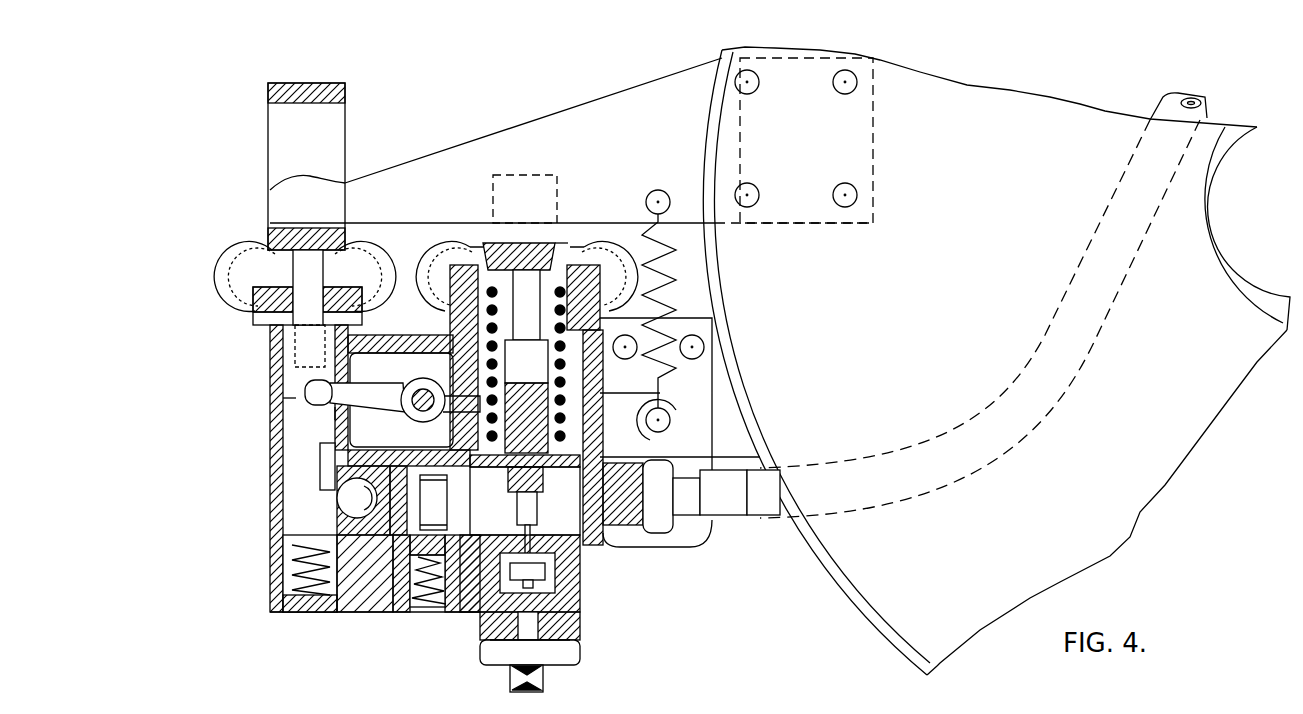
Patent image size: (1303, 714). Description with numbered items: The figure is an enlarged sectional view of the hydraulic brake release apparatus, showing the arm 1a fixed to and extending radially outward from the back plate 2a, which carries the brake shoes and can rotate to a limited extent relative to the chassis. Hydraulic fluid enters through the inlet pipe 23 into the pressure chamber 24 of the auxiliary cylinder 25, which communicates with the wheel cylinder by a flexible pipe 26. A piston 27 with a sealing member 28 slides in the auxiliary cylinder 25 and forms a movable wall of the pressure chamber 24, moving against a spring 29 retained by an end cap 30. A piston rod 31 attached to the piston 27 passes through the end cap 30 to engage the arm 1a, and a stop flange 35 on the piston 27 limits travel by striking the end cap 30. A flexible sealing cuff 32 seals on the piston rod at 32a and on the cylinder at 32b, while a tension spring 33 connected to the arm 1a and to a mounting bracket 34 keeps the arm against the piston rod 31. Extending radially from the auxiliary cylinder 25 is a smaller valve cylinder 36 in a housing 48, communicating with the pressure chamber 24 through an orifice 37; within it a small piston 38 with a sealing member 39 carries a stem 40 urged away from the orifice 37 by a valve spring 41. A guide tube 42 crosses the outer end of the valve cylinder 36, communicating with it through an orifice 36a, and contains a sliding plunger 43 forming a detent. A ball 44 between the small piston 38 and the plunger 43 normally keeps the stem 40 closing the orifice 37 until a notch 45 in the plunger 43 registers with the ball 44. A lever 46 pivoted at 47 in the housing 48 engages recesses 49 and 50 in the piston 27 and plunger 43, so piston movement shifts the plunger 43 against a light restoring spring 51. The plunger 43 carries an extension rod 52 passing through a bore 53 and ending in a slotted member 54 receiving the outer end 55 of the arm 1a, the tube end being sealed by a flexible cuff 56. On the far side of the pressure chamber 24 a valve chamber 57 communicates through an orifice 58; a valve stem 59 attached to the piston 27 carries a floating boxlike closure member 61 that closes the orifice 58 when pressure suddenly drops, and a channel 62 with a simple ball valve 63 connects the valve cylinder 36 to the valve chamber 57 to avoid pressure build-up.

The arm 1a is at (500, 150).
The back plate 2a is at (938, 333).
The inlet pipe 23 is at (540, 678).
The pressure chamber 24 is at (592, 505).
The auxiliary cylinder 25 is at (590, 383).
The flexible pipe 26 is at (1033, 418).
The piston 27 is at (592, 452).
The sealing member 28 is at (712, 457).
The spring 29 is at (490, 330).
The end cap 30 is at (510, 264).
The piston rod 31 is at (495, 258).
The flexible sealing cuff 32 is at (597, 247).
The cuff seal on piston rod 32a is at (568, 243).
The cuff seal on auxiliary cylinder 32b is at (665, 305).
The tension spring 33 is at (668, 272).
The mounting bracket 34 is at (700, 411).
The stop flange 35 is at (500, 250).
The valve cylinder 36 is at (348, 468).
The orifice 36a is at (337, 528).
The orifice 37 is at (448, 568).
The small piston 38 is at (350, 545).
The sealing member 39 is at (393, 565).
The stem 40 is at (462, 502).
The valve spring 41 is at (428, 468).
The guide tube 42 is at (276, 450).
The plunger 43 is at (292, 398).
The ball 44 is at (340, 500).
The notch 45 is at (322, 452).
The lever 46 is at (305, 386).
The pivot 47 is at (403, 383).
The housing 48 is at (345, 418).
The recess 49 is at (480, 352).
The recess 50 is at (292, 372).
The restoring spring 51 is at (290, 583).
The extension rod 52 is at (300, 272).
The bore 53 is at (283, 305).
The slotted member 54 is at (278, 140).
The outer end of arm 55 is at (290, 192).
The flexible cuff 56 is at (262, 252).
The valve chamber 57 is at (562, 612).
The orifice 58 is at (560, 572).
The valve stem 59 is at (530, 520).
The valve closure member 61 is at (500, 632).
The channel 62 is at (470, 572).
The ball valve 63 is at (412, 578).